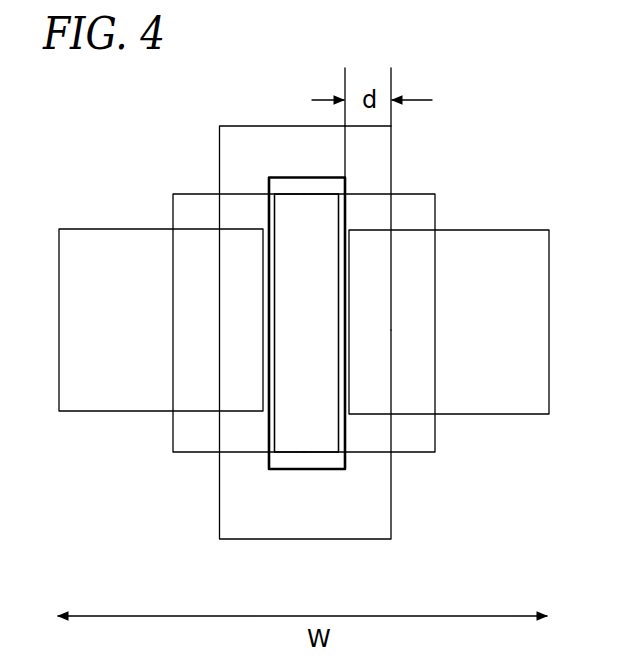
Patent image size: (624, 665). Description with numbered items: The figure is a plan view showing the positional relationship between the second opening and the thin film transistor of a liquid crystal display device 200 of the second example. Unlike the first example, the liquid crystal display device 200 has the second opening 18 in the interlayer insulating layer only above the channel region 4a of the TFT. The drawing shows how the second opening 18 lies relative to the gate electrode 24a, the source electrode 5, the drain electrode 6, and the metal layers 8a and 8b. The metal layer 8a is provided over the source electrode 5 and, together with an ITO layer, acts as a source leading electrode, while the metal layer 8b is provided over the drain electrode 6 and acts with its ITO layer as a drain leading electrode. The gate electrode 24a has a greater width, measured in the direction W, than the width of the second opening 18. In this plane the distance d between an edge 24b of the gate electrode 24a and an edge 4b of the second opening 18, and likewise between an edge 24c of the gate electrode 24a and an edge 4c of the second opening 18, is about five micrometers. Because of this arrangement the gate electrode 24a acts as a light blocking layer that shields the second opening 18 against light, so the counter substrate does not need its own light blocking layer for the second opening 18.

The liquid crystal display device 200 is at (576, 96).
The channel region 4a is at (300, 217).
The edge of the second opening 4b is at (268, 287).
The edge of the second opening 4c is at (345, 298).
The source electrode 5 is at (188, 207).
The drain electrode 6 is at (418, 210).
The metal layer 8a is at (123, 400).
The metal layer 8b is at (499, 400).
The second opening 18 is at (338, 460).
The gate electrode 24a is at (312, 540).
The edge of the gate electrode 24b is at (218, 163).
The edge of the gate electrode 24c is at (393, 163).